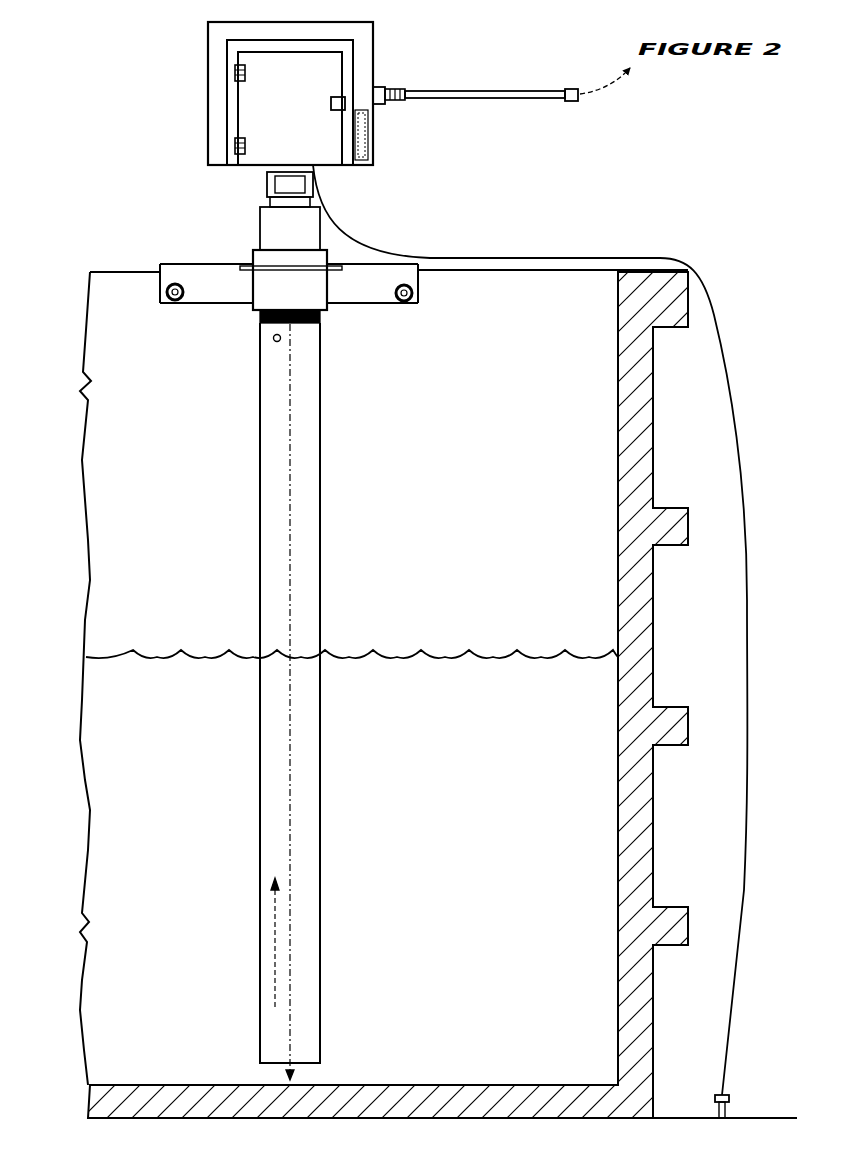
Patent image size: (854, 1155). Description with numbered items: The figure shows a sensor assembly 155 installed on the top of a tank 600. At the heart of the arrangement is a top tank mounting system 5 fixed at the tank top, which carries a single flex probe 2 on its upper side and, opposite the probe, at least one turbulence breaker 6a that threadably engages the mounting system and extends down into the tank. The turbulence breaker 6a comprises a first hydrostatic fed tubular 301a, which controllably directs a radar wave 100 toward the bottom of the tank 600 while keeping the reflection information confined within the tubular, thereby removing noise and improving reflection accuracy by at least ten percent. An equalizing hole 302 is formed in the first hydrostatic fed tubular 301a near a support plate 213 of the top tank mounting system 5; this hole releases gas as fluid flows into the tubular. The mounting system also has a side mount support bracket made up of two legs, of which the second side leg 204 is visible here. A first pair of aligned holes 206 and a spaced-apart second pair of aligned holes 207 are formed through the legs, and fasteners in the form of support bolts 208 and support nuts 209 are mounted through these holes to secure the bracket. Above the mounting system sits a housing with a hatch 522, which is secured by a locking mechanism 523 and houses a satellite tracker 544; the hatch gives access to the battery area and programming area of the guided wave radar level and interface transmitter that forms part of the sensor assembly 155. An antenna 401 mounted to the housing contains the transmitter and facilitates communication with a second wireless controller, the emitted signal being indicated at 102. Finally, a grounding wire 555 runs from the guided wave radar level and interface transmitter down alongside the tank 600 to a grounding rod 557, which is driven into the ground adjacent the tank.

The sensor assembly 155 is at (54, 58).
The locking mechanism 523 is at (374, 46).
The housing with a hatch 522 is at (336, 75).
The satellite tracker 544 is at (368, 138).
The antenna 401 is at (486, 92).
The signal 102 is at (609, 96).
The single flex probe 2 is at (267, 178).
The top tank mounting system 5 is at (396, 210).
The support plate 213 is at (250, 268).
The second side leg 204 is at (228, 304).
The first pair of aligned holes 206 is at (168, 300).
The support bolts 208 is at (178, 296).
The support nuts 209 is at (398, 298).
The second pair of aligned holes 207 is at (412, 298).
The tank 600 is at (126, 270).
The first hydrostatic fed tubular 301a is at (320, 530).
The turbulence breaker 6a is at (334, 363).
The equalizing hole 302 is at (274, 340).
The radar wave 100 is at (292, 946).
The grounding wire 555 is at (749, 632).
The grounding rod 557 is at (732, 1114).